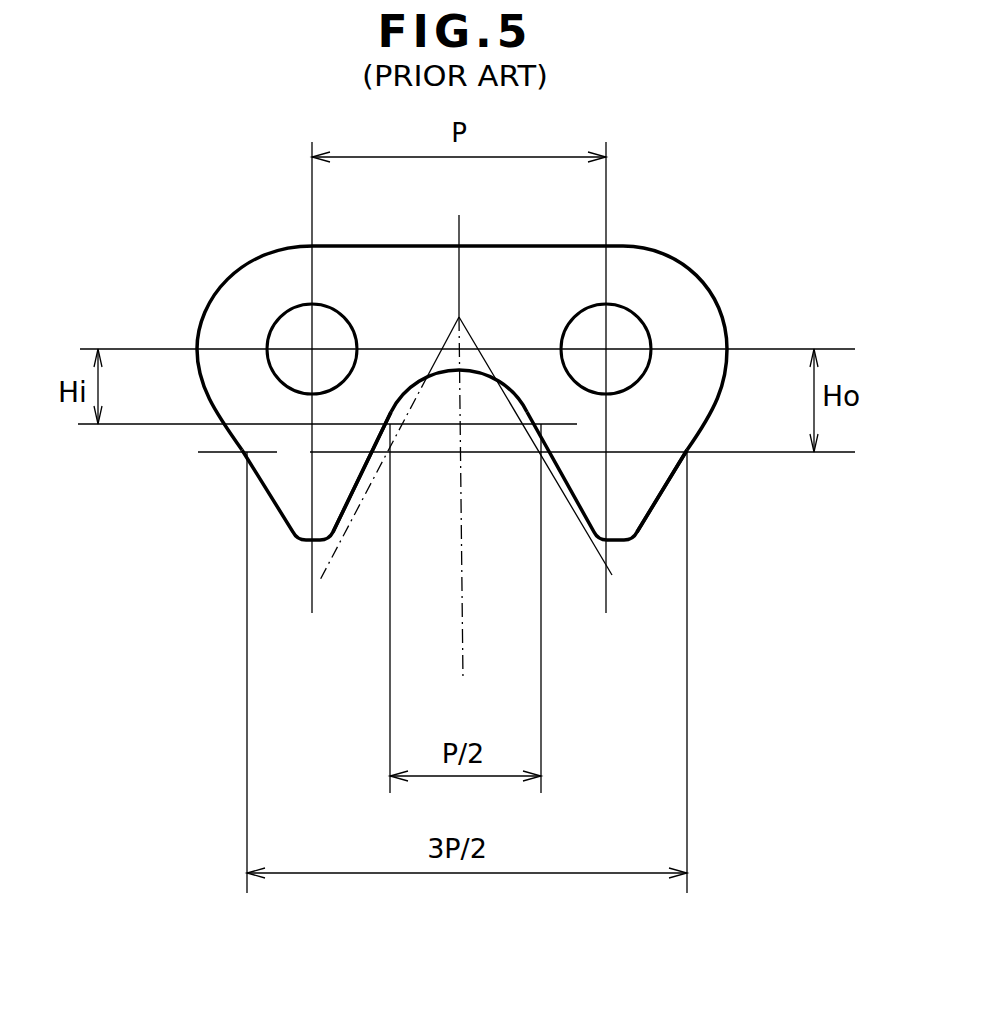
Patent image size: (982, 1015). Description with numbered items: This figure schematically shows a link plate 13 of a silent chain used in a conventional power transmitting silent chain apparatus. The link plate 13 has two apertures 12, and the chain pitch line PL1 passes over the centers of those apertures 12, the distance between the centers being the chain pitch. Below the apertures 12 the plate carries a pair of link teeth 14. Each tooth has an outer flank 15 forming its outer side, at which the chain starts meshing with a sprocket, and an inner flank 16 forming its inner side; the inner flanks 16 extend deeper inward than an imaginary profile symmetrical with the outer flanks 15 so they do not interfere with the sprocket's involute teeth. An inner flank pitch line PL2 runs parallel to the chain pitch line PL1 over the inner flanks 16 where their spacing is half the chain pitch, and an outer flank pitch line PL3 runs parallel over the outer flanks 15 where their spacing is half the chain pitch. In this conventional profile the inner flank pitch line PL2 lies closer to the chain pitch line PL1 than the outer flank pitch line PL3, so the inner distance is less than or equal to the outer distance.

The apertures 12 is at (297, 325).
The link plate 13 is at (685, 302).
The link teeth 14 is at (298, 513).
The outer flanks 15 is at (668, 480).
The inner flanks 16 is at (350, 507).
The chain pitch line PL1 is at (389, 349).
The inner flank pitch line PL2 is at (487, 427).
The outer flank pitch line PL3 is at (277, 452).